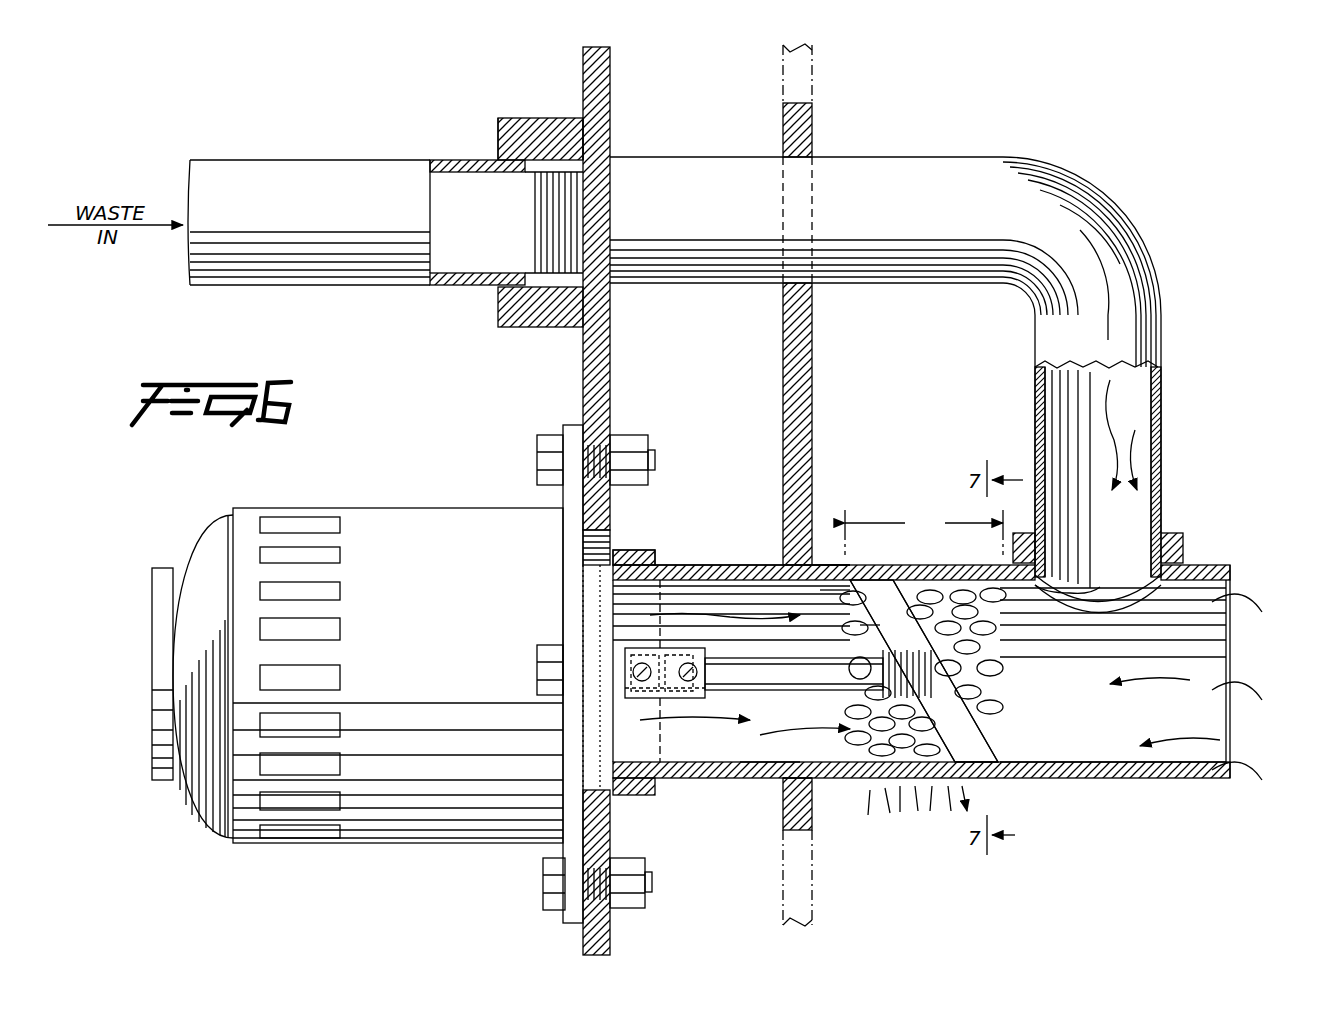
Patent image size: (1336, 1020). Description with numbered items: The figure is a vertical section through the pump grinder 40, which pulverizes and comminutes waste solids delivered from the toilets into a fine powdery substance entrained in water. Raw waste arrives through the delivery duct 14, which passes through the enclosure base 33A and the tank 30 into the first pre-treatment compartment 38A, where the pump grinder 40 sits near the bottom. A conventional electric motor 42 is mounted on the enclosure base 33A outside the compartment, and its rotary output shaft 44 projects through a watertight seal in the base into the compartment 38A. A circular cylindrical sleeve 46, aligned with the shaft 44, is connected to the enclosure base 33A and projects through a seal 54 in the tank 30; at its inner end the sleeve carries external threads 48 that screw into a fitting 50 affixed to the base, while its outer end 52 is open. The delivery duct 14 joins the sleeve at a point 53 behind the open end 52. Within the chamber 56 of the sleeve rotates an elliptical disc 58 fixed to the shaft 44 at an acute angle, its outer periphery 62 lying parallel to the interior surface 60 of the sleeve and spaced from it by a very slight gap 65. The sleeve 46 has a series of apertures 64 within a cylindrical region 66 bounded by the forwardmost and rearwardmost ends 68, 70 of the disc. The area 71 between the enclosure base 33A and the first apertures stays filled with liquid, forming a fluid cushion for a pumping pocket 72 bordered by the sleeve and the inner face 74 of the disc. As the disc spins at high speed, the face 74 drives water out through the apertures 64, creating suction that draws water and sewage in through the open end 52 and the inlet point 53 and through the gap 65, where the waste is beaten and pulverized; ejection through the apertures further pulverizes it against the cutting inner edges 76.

The delivery duct 14 is at (262, 178).
The first pre-treatment compartment 38A is at (898, 132).
The tank 30 is at (818, 358).
The enclosure base 33A is at (583, 352).
The electric motor 42 is at (395, 500).
The fitting 50 is at (640, 558).
The external threads 48 is at (665, 560).
The interior surface 60 is at (727, 565).
The seal 54 is at (818, 562).
The sleeve 46 is at (832, 562).
The cylindrical region 66 is at (924, 532).
The open outer end 52 is at (1242, 572).
The sewage inlet point 53 is at (1128, 585).
The apertures 64 is at (1000, 705).
The rearwardmost end of disc 70 is at (1000, 758).
The pump grinder 40 is at (1234, 770).
The chamber 56 is at (1125, 775).
The disc 58 is at (992, 762).
The gap 65 is at (975, 762).
The outer periphery 62 is at (958, 762).
The inner edges of apertures 76 is at (846, 795).
The pumping pocket 72 is at (790, 793).
The liquid-filled area 71 is at (770, 748).
The rotary output shaft 44 is at (773, 693).
The forwardmost end of disc 68 is at (832, 593).
The inner face of disc 74 is at (877, 623).